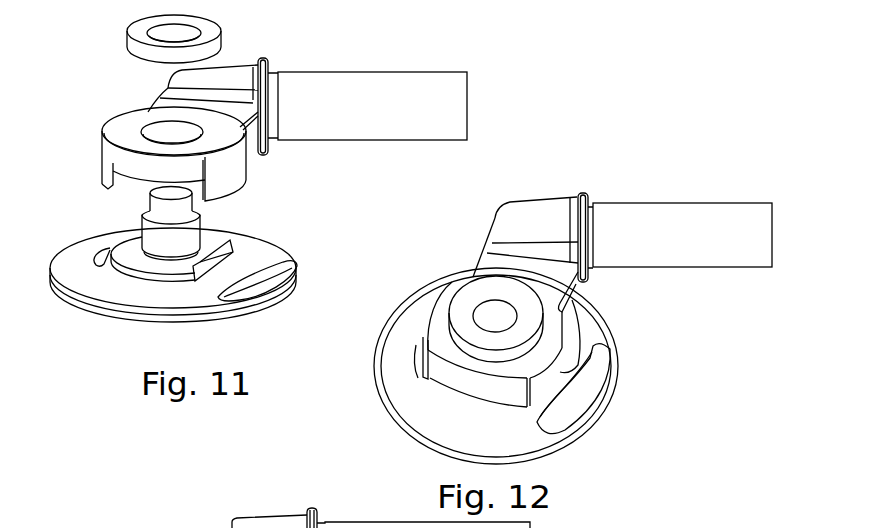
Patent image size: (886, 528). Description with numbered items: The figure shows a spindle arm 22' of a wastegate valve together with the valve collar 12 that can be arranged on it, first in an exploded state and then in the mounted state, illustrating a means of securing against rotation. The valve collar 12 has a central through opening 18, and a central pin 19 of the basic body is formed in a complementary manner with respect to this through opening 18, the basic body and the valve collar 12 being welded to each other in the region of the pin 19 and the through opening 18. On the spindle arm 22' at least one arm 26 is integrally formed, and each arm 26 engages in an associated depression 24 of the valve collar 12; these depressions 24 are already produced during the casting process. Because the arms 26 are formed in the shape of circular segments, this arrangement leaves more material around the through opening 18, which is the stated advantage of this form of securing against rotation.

In FIG. 11, the valve collar 12 is at (133, 293).
In FIG. 12, the valve collar 12 is at (432, 427).
In FIG. 11, the through opening 18 is at (164, 141).
In FIG. 11, the pin 19 is at (160, 210).
In FIG. 12, the pin 19 is at (497, 316).
In FIG. 11, the spindle arm 22' is at (307, 85).
In FIG. 12, the spindle arm 22' is at (622, 230).
In FIG. 11, the depression 24 is at (100, 256).
In FIG. 12, the depression 24 is at (432, 375).
In FIG. 11, the arm 26 is at (103, 180).
In FIG. 12, the arm 26 is at (558, 358).